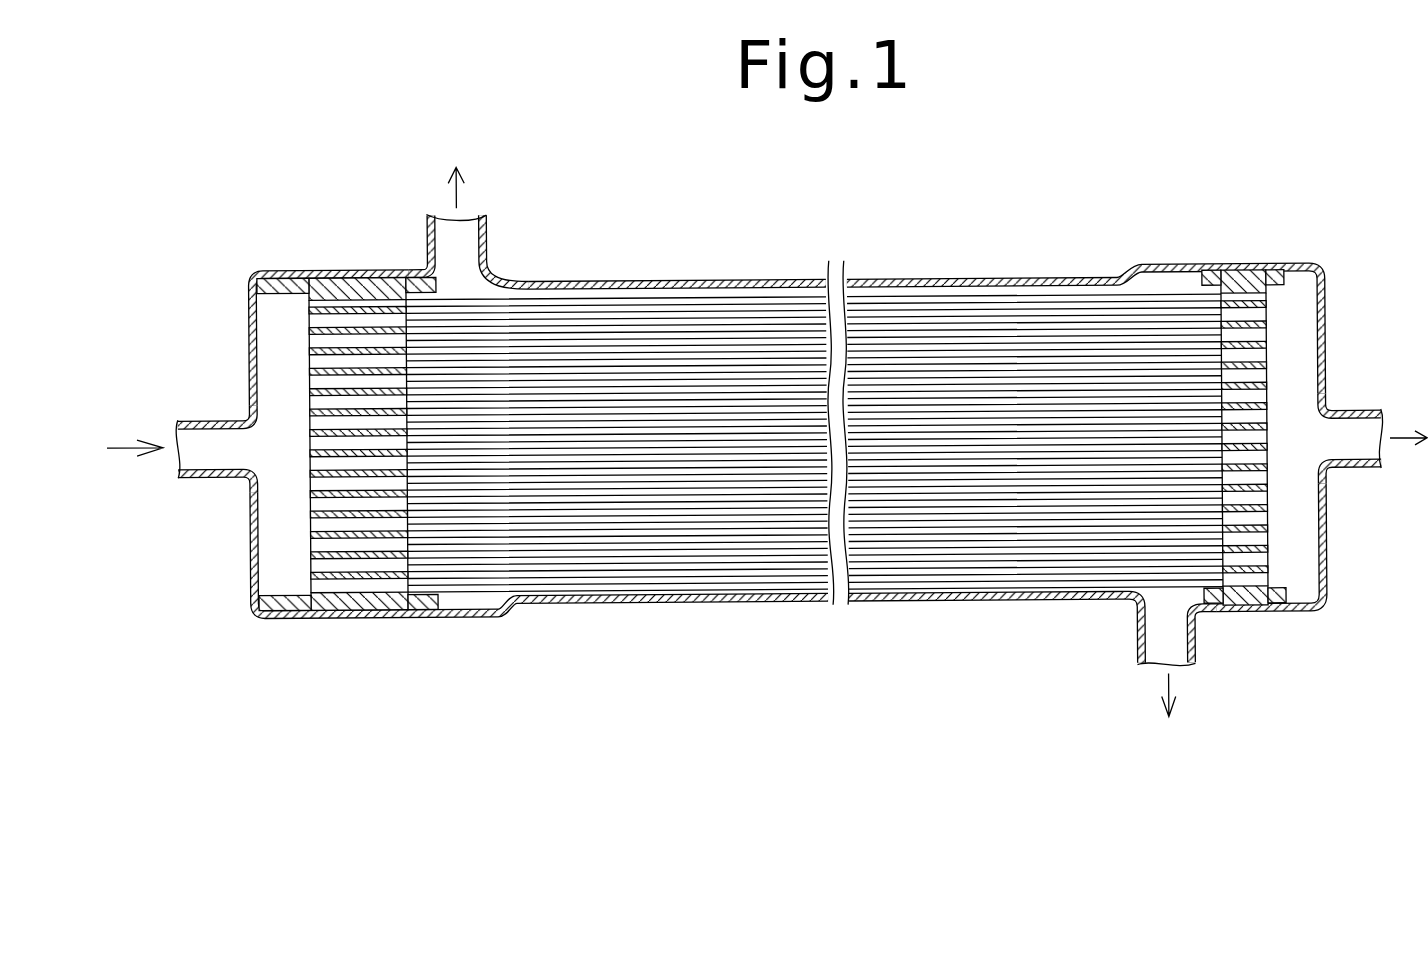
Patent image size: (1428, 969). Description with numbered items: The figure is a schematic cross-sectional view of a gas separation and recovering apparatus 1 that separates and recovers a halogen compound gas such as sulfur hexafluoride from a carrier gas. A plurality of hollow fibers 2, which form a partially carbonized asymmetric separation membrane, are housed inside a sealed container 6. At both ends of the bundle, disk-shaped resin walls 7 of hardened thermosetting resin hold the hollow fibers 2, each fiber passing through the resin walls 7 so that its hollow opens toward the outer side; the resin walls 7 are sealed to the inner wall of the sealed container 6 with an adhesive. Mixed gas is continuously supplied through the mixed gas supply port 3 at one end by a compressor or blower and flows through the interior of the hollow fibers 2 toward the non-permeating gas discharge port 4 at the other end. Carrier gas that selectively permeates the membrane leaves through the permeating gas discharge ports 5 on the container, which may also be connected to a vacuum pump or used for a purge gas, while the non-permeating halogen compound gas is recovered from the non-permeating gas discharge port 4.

The gas separation and recovering apparatus 1 is at (775, 252).
The hollow fibers 2 is at (1082, 296).
The mixed gas supply port 3 is at (212, 419).
The non-permeating gas discharge port 4 is at (1355, 417).
The permeating gas discharge ports 5 is at (486, 239).
The sealed container 6 is at (248, 572).
The resin walls 7 is at (335, 288).